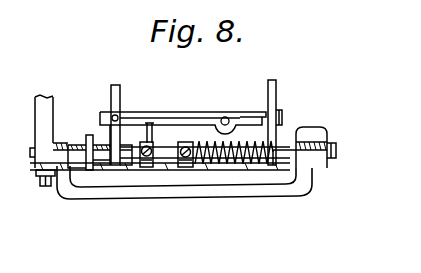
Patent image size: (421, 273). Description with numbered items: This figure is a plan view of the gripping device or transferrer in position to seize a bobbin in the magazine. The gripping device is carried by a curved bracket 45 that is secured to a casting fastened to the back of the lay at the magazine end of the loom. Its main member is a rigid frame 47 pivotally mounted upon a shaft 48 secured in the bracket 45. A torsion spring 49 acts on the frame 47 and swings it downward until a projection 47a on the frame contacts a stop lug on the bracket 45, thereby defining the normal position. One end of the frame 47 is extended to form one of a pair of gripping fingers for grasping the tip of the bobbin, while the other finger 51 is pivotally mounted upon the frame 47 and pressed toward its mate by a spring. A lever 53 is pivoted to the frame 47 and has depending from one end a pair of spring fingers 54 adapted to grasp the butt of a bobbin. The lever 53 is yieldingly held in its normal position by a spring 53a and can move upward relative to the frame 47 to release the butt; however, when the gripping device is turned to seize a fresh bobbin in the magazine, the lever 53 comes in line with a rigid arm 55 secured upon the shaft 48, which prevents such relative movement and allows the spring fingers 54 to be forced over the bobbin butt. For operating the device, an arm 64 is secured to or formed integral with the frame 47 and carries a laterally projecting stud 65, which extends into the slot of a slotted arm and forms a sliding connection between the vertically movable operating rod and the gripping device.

The curved bracket 45 is at (130, 198).
The rigid frame 47 is at (109, 112).
The projection 47a is at (300, 128).
The shaft 48 is at (332, 151).
The torsion spring 49 is at (240, 163).
The finger 51 is at (273, 97).
The lever 53 is at (163, 118).
The spring 53a is at (279, 115).
The spring fingers 54 is at (120, 97).
The rigid arm 55 is at (151, 123).
The arm 64 is at (88, 134).
The stud 65 is at (72, 142).